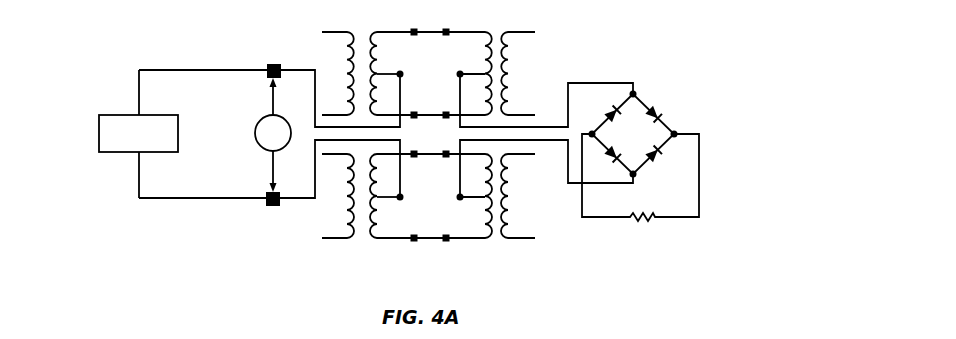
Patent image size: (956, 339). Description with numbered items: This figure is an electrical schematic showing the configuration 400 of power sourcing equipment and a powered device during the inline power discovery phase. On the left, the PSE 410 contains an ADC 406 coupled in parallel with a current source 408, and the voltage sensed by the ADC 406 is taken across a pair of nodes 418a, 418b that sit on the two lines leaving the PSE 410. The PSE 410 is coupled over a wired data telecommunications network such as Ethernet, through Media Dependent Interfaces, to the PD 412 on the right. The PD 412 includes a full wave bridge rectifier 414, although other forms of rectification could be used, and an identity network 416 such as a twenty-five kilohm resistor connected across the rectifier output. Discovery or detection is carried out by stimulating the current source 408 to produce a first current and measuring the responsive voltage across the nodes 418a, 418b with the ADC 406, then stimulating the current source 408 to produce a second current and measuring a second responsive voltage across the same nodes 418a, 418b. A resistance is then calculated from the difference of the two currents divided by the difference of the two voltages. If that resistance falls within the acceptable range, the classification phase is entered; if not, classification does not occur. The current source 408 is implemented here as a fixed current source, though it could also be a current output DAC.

The configuration 400 is at (785, 62).
The ADC 406 is at (99, 133).
The current source 408 is at (255, 133).
The PSE 410 is at (413, 255).
The PD 412 is at (705, 255).
The full wave bridge rectifier 414 is at (638, 96).
The identity network 416 is at (700, 175).
The node 418a is at (267, 66).
The node 418b is at (270, 208).